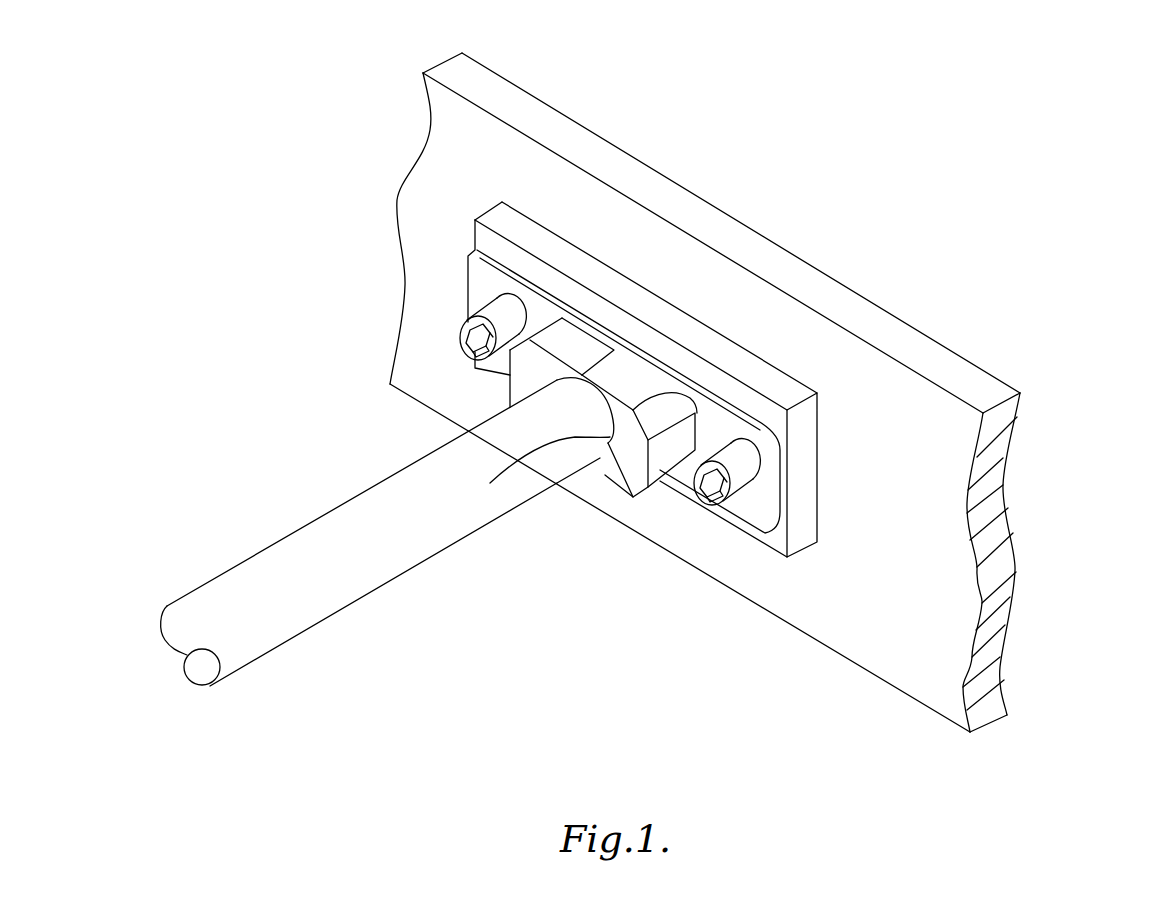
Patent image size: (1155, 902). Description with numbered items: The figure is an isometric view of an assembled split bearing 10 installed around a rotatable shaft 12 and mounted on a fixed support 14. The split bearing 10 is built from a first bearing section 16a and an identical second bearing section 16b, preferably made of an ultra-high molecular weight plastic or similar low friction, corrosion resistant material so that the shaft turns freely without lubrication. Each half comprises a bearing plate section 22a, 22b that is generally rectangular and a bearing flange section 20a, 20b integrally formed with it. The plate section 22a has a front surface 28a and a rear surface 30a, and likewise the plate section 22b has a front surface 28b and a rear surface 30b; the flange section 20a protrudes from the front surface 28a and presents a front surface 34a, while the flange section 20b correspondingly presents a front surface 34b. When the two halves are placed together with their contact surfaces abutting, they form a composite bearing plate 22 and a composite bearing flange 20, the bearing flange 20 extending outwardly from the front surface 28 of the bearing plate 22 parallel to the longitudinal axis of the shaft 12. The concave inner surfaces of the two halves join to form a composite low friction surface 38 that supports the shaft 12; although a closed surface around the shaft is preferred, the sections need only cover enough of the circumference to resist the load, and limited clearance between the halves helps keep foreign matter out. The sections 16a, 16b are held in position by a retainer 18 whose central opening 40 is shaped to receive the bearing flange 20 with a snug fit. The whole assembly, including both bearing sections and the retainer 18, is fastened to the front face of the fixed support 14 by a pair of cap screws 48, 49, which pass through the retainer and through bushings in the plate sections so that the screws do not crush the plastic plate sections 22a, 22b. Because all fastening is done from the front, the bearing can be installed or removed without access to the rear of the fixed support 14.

The split bearing 10 is at (830, 597).
The rotatable shaft 12 is at (309, 533).
The fixed support 14 is at (900, 417).
The first bearing section 16a is at (470, 208).
The second bearing section 16b is at (875, 490).
The retainer 18 is at (760, 512).
The bearing flange 20 is at (673, 370).
The bearing flange section 20a is at (503, 395).
The bearing flange section 20b is at (600, 480).
The bearing plate 22 is at (665, 300).
The bearing plate section 22a is at (500, 210).
The bearing plate section 22b is at (850, 385).
The front surface of bearing plate 28 is at (586, 290).
The front surface of bearing plate section 28a is at (477, 240).
The front surface of bearing plate section 28b is at (768, 540).
The rear surface of bearing plate section 30a is at (527, 213).
The rear surface of bearing plate section 30b is at (817, 390).
The front surface of bearing flange section 34a is at (397, 378).
The front surface of bearing flange section 34b is at (622, 478).
The composite low friction surface 38 is at (455, 510).
The central opening 40 is at (467, 290).
The cap screw 48 is at (457, 335).
The cap screw 49 is at (700, 498).